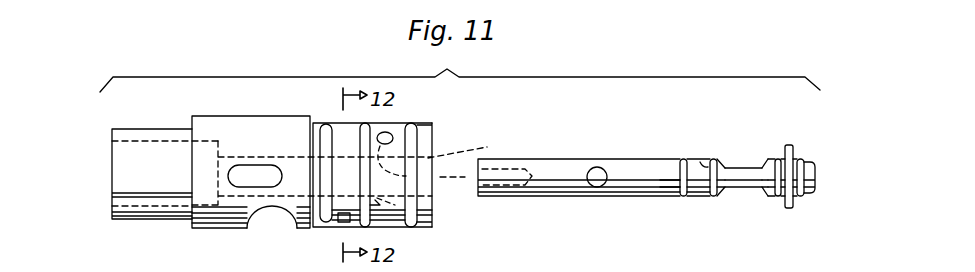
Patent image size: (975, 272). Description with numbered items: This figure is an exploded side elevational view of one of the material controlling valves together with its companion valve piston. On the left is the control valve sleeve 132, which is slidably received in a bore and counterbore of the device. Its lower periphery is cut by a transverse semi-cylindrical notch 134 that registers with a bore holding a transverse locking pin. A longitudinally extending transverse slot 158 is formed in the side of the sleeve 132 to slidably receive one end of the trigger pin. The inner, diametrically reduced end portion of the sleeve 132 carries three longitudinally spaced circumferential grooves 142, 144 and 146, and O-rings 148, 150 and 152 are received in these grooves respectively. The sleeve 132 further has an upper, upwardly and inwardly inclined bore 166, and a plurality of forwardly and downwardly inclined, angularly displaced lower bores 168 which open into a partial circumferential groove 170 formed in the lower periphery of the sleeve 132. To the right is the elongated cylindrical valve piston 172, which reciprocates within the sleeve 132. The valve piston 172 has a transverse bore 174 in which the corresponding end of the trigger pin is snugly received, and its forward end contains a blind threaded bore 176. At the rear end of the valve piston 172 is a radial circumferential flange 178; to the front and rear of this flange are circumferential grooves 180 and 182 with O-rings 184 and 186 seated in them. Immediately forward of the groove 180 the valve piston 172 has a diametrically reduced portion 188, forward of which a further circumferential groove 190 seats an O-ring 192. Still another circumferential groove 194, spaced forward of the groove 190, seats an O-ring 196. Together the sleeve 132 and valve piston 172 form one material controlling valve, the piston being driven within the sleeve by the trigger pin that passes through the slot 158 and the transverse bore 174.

The control valve sleeve 132 is at (147, 137).
The transverse slot 158 is at (255, 168).
The O-ring 148 is at (325, 147).
The lower transverse semi-cylindrical notch 134 is at (285, 210).
The partial circumferential groove 170 is at (343, 222).
The circumferential groove 142 is at (363, 134).
The O-ring 150 is at (410, 132).
The circumferential groove 146 is at (415, 142).
The upper inclined bore 166 is at (470, 150).
The O-ring 152 is at (430, 213).
The circumferential groove 144 is at (380, 218).
The lower inclined bore 168 is at (400, 217).
The valve piston 172 is at (635, 173).
The blind threaded bore 176 is at (520, 190).
The transverse bore 174 is at (598, 186).
The circumferential groove 194 is at (675, 188).
The O-ring 196 is at (698, 190).
The circumferential groove 190 is at (705, 168).
The O-ring 192 is at (715, 190).
The diametrically reduced portion 188 is at (743, 173).
The circumferential groove 180 is at (767, 177).
The O-ring 184 is at (773, 162).
The radial circumferential flange 178 is at (790, 145).
The O-ring 186 is at (802, 192).
The circumferential groove 182 is at (817, 181).